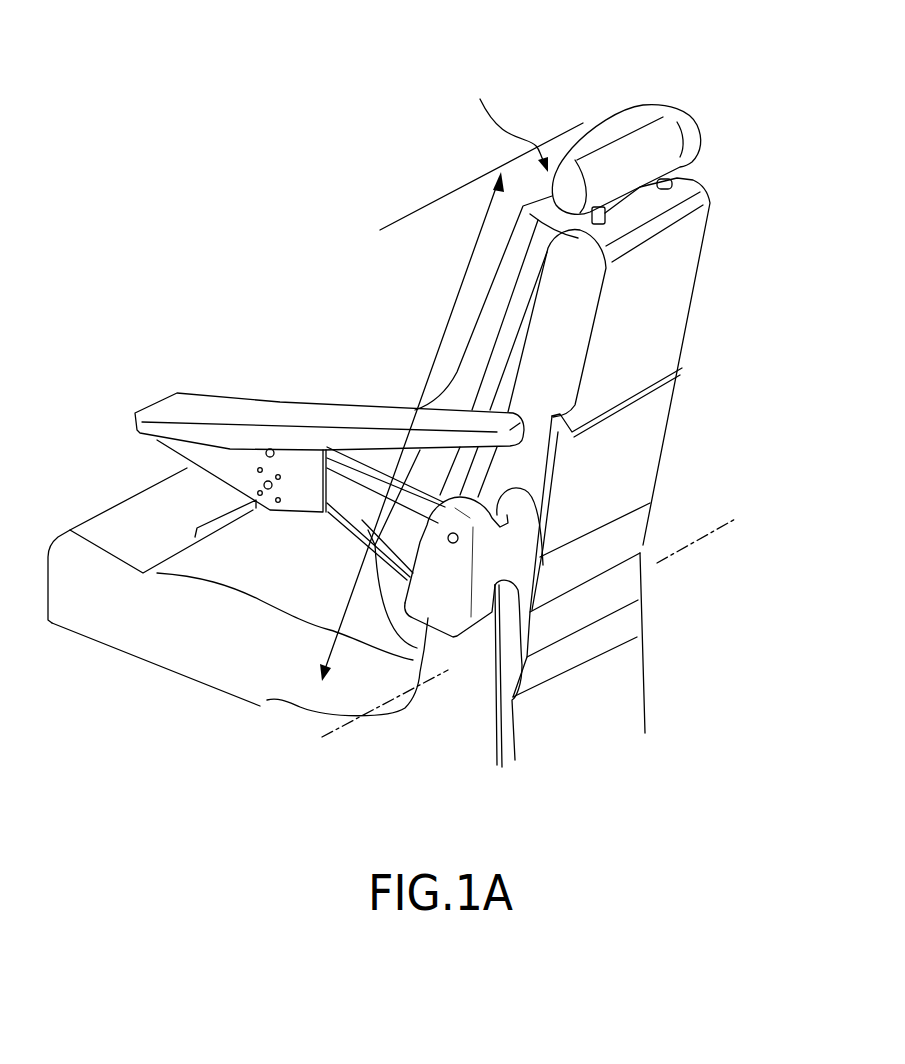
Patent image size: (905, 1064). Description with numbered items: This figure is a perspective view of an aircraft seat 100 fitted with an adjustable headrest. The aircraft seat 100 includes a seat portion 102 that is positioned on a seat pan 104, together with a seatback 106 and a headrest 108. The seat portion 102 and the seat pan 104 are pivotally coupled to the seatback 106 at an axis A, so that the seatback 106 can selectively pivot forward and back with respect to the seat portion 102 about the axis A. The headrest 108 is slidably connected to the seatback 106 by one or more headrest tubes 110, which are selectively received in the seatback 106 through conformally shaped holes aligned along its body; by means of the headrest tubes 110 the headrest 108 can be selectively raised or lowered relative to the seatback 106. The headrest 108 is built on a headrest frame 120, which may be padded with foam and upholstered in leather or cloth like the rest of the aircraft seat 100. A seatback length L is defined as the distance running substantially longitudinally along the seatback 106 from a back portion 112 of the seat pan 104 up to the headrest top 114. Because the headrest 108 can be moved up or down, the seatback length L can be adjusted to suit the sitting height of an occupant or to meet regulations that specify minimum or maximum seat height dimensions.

The aircraft seat 100 is at (256, 82).
The seat portion 102 is at (168, 622).
The seat pan 104 is at (168, 672).
The seatback 106 is at (645, 287).
The headrest 108 is at (655, 142).
The headrest tubes 110 is at (668, 183).
The back portion 112 is at (288, 700).
The headrest top 114 is at (405, 218).
The headrest frame 120 is at (505, 123).
The seatback length L is at (430, 377).
The axis A is at (529, 627).